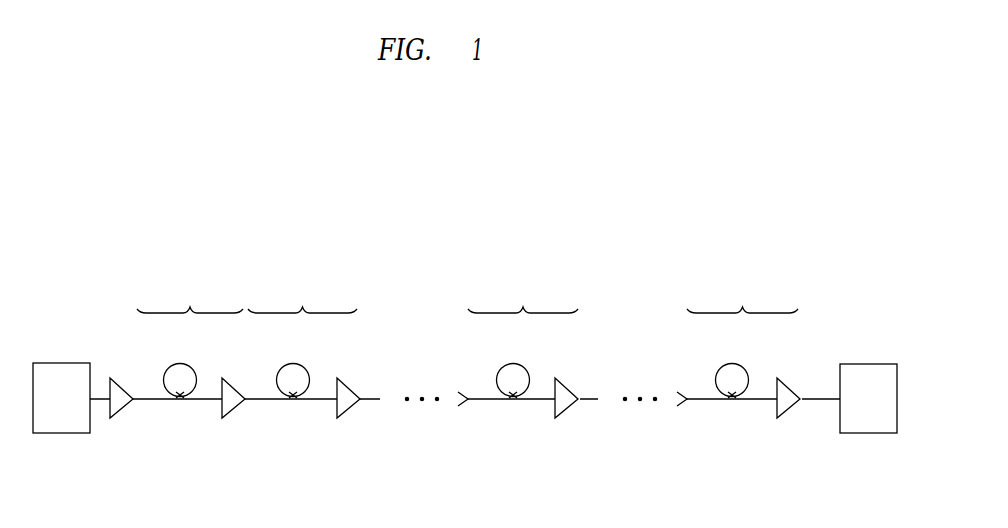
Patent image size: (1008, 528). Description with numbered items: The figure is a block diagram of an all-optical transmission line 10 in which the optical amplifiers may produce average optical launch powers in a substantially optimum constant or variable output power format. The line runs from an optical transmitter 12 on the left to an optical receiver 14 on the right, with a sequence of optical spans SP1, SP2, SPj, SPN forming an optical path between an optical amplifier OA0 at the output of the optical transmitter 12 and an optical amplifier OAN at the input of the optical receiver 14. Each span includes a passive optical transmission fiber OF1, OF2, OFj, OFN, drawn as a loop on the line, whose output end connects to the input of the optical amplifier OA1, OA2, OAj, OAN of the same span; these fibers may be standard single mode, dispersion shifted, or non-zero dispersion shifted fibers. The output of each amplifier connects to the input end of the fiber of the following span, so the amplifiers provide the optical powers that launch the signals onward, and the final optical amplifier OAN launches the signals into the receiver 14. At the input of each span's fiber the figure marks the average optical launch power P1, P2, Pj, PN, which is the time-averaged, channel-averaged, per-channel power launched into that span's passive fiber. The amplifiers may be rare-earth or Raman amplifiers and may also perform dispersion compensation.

The all-optical transmission line 10 is at (632, 246).
The optical transmitter 12 is at (72, 410).
The optical receiver 14 is at (880, 410).
The optical amplifier OA0 is at (113, 378).
The optical amplifier OA1 is at (227, 378).
The optical amplifier OA2 is at (343, 378).
The optical amplifier OAj is at (557, 378).
The optical amplifier OAN is at (782, 378).
The passive optical transmission fiber OF1 is at (181, 398).
The passive optical transmission fiber OF2 is at (294, 398).
The passive optical transmission fiber OFj is at (514, 398).
The passive optical transmission fiber OFN is at (733, 398).
The average optical launch power P1 is at (140, 402).
The average optical launch power P2 is at (250, 402).
The average optical launch power Pj is at (475, 402).
The average optical launch power PN is at (693, 402).
The optical span SP1 is at (190, 292).
The optical span SP2 is at (302, 292).
The optical span SPj is at (523, 292).
The optical span SPN is at (742, 292).